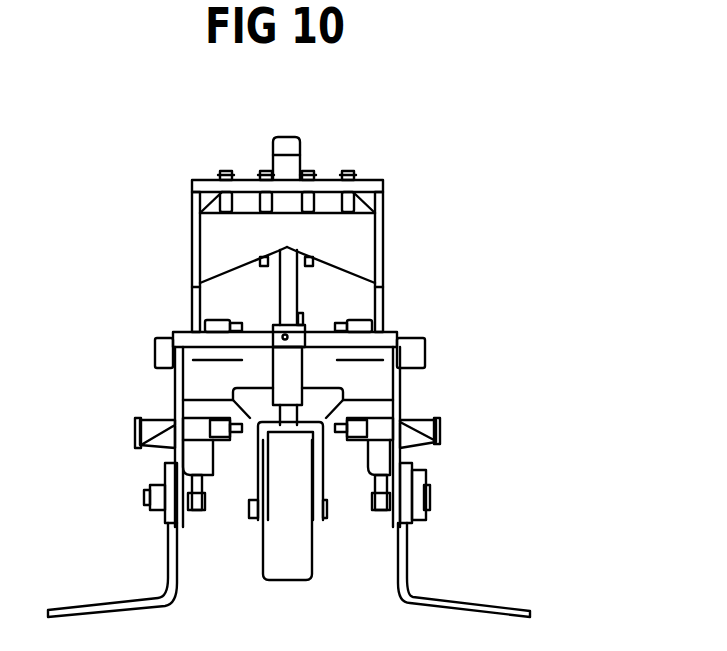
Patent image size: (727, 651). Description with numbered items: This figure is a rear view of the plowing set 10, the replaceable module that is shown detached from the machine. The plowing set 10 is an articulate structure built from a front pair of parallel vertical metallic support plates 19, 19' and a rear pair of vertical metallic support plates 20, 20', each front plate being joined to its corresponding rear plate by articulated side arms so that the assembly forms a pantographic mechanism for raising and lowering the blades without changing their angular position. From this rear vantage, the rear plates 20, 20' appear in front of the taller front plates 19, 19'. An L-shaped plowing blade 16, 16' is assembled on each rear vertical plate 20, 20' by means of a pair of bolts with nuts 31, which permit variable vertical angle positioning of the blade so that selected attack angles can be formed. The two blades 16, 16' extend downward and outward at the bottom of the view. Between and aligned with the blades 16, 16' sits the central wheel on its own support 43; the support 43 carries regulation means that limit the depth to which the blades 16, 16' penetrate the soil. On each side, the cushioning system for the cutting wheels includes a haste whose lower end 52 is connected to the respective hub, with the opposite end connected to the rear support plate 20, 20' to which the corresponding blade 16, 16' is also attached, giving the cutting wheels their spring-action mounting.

The plowing set 10 is at (402, 150).
The front vertical metallic support plate 19 is at (339, 256).
The front vertical metallic support plate 19' is at (189, 259).
The wheel support 43 is at (286, 368).
The rear vertical metallic support plate 20 is at (331, 423).
The rear vertical metallic support plate 20' is at (111, 401).
The bolts with nuts 31 is at (424, 507).
The lower end of haste 52 is at (198, 508).
The L-shaped plowing blade 16 is at (473, 570).
The L-shaped plowing blade 16' is at (112, 570).